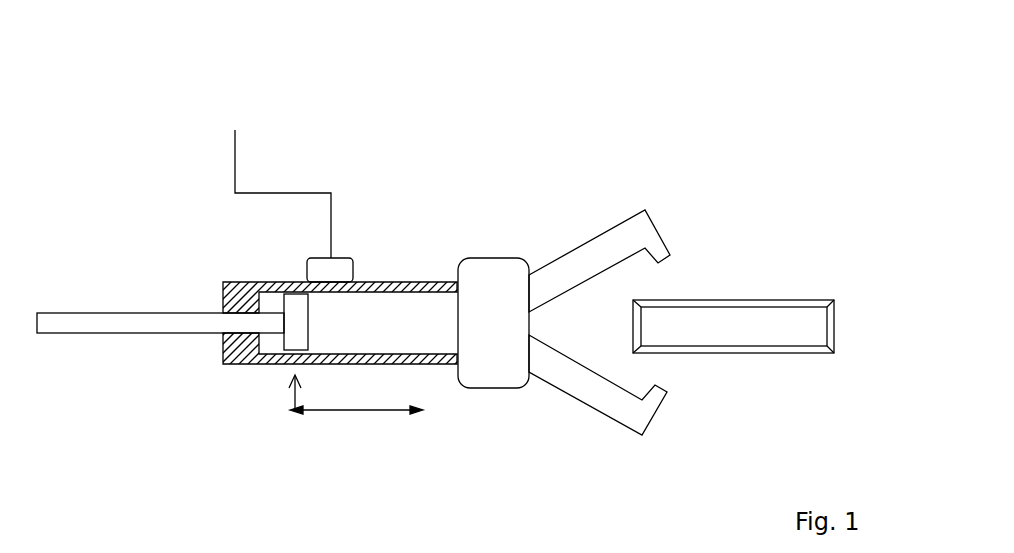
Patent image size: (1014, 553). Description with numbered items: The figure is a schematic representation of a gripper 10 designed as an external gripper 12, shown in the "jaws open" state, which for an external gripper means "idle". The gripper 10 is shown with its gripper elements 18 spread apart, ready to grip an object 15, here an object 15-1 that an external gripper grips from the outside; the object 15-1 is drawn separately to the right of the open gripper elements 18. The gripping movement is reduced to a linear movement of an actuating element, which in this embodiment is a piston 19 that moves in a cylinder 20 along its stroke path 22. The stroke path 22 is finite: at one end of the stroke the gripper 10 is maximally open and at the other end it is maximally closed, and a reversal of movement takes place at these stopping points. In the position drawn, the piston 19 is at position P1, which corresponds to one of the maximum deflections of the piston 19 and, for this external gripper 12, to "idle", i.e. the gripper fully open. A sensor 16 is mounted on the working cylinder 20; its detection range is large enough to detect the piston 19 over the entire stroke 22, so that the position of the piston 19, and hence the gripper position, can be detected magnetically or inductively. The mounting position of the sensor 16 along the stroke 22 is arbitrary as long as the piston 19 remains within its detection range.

The gripper 10 is at (407, 233).
The external gripper 12 is at (353, 295).
The object 15 is at (733, 271).
The object gripped from the outside 15-1 is at (733, 300).
The sensor 16 is at (307, 265).
The gripper elements 18 is at (580, 235).
The piston 19 is at (268, 326).
The cylinder 20 is at (223, 364).
The stroke path 22 is at (377, 411).
The position P1 is at (296, 414).